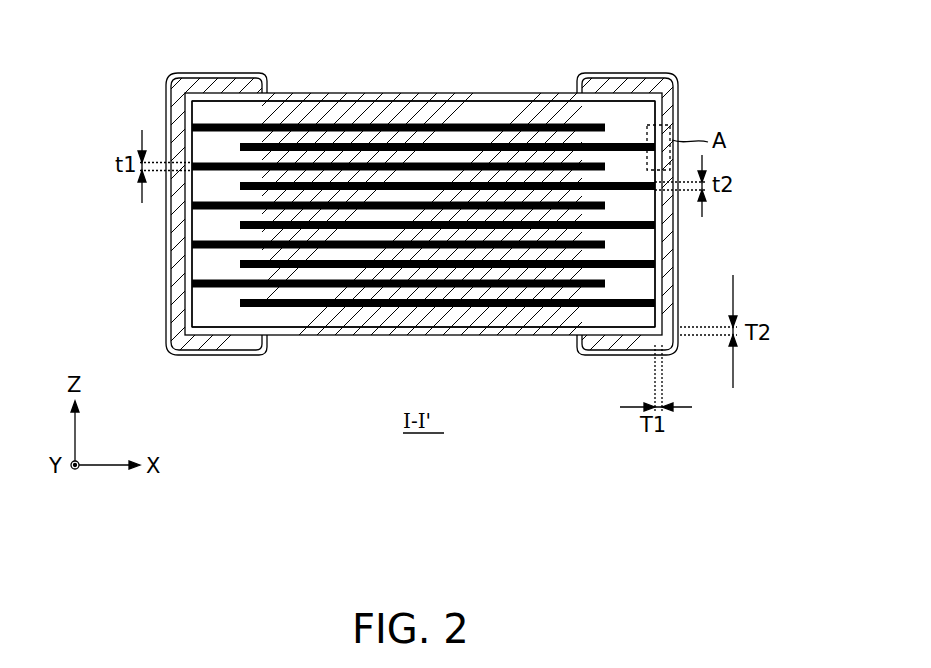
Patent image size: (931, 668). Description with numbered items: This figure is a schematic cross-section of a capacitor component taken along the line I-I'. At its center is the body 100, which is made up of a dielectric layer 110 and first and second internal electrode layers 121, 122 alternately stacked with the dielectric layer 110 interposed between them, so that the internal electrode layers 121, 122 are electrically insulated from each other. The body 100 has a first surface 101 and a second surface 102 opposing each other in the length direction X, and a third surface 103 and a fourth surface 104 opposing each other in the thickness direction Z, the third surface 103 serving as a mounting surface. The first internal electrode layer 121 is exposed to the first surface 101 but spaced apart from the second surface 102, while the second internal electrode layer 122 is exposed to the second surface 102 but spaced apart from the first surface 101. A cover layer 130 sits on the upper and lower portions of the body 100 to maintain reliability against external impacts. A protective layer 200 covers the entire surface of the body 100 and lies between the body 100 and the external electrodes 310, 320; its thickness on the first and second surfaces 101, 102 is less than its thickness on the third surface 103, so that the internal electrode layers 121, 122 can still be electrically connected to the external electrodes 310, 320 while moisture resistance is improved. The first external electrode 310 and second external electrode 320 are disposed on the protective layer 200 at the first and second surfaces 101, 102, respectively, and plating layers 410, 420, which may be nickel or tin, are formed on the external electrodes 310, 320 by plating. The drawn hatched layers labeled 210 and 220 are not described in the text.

The body 100 is at (570, 88).
The protective layer 200 is at (425, 93).
The dielectric layer 110 is at (463, 140).
The first surface 101 is at (190, 113).
The second surface 102 is at (657, 112).
The third surface 103 is at (293, 328).
The fourth surface 104 is at (282, 102).
The first internal electrode layer 121 is at (333, 123).
The second internal electrode layer 122 is at (390, 142).
The cover layer 130 is at (522, 110).
The first electrode layer 210 is at (180, 238).
The second electrode layer 220 is at (675, 240).
The first external electrode 310 is at (171, 328).
The second external electrode 320 is at (619, 348).
The plating layer 410 is at (167, 305).
The plating layer 420 is at (602, 355).